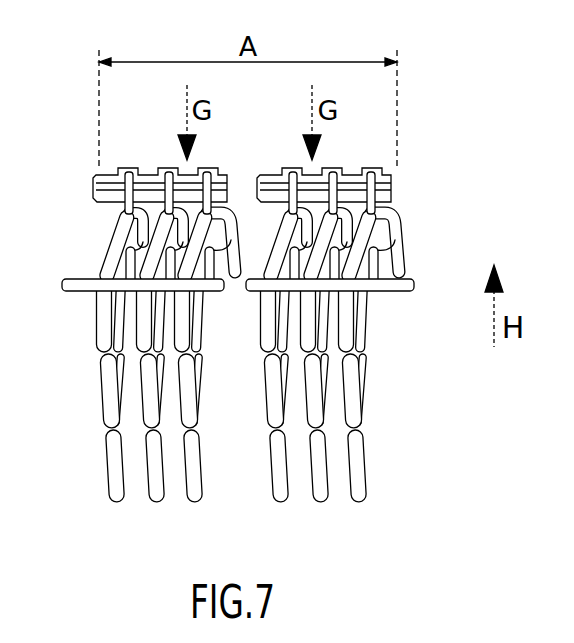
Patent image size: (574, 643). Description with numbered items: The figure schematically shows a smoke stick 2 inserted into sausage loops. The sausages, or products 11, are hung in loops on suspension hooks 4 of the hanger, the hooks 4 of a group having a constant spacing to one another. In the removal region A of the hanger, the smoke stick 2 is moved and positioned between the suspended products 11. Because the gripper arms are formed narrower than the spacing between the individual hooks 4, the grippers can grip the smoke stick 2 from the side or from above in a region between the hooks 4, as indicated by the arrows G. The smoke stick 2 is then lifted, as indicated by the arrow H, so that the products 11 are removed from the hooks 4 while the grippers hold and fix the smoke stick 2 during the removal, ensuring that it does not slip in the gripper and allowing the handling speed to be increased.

The suspension hooks 4 is at (126, 236).
The smoke stick 2 is at (417, 290).
The products 11 is at (366, 500).